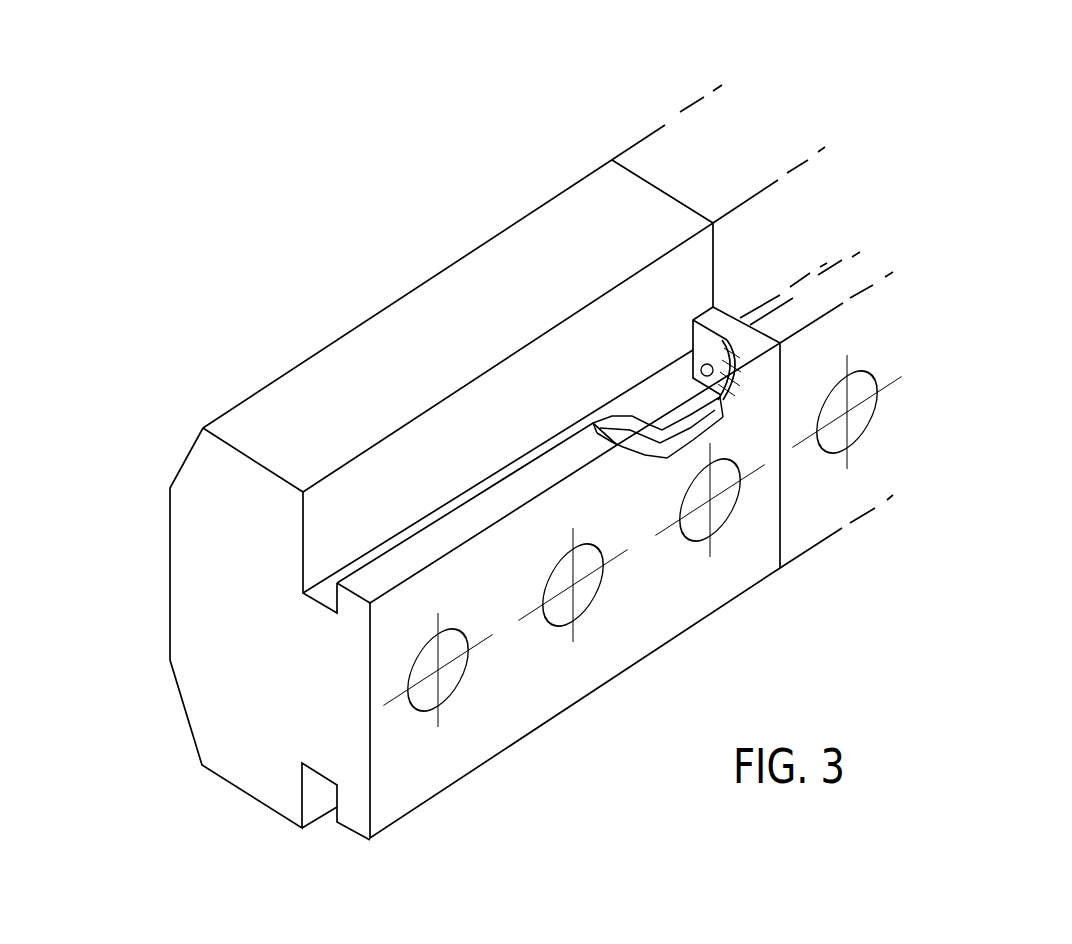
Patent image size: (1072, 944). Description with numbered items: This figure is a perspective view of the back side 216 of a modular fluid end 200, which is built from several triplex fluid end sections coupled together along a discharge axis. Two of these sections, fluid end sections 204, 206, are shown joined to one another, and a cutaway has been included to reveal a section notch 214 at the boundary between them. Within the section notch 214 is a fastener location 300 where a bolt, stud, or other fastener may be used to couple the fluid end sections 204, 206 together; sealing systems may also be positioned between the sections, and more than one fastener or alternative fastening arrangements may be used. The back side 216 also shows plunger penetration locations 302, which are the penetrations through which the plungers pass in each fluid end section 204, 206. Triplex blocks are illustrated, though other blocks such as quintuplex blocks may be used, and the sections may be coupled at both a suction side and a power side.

The novemplex fluid end 200 is at (893, 112).
The triplex fluid end section 204 is at (647, 145).
The triplex fluid end section 206 is at (320, 378).
The section notch 214 is at (730, 403).
The back side 216 is at (702, 663).
The fastener location 300 is at (702, 370).
The plunger penetration location 302 is at (448, 680).